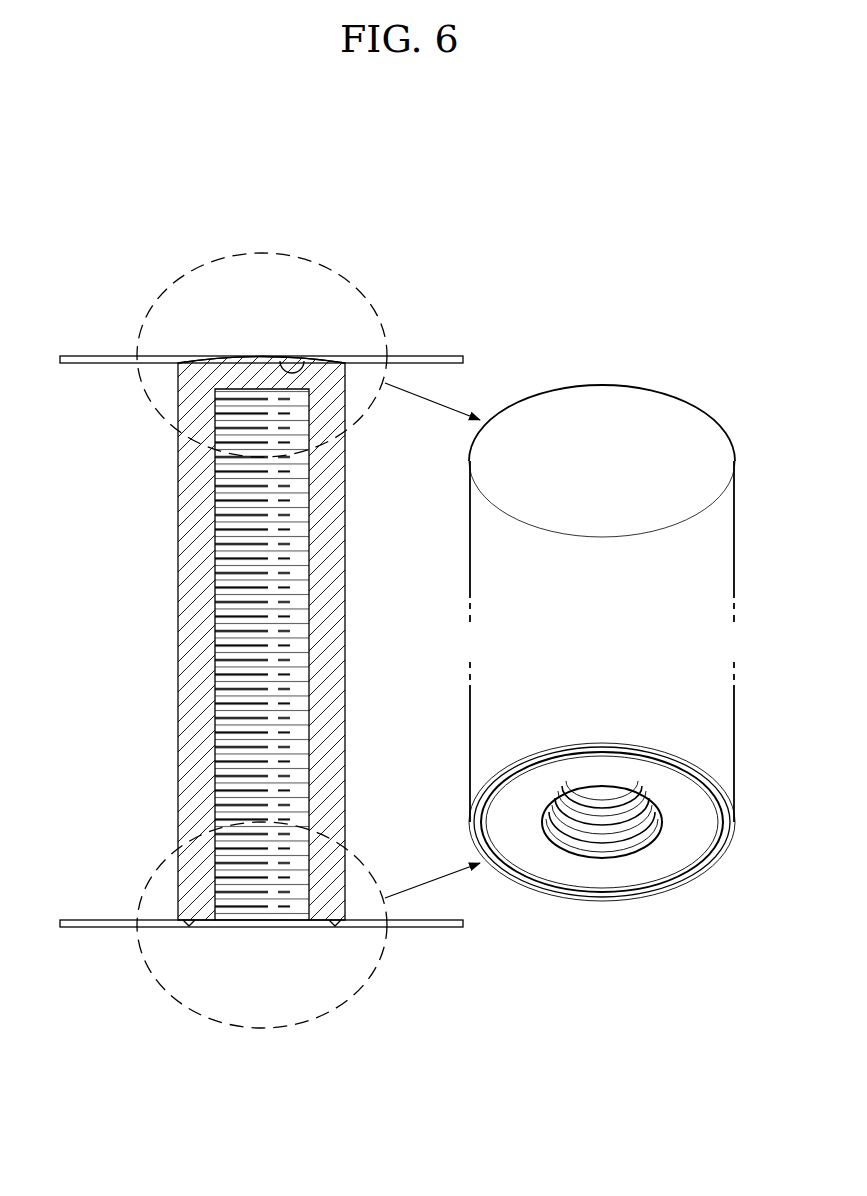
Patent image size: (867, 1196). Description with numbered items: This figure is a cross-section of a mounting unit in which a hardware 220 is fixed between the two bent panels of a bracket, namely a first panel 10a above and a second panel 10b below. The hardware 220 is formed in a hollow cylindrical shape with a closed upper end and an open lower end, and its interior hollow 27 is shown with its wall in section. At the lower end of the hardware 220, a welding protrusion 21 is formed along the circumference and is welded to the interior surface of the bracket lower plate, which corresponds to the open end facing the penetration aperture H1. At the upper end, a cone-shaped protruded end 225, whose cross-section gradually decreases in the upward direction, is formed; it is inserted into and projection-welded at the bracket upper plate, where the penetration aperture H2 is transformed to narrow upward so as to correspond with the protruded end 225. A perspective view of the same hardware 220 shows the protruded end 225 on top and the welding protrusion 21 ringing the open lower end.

The first panel 10a is at (87, 358).
The second panel 10b is at (87, 927).
The hardware 220 is at (178, 584).
The protruded end 225 is at (262, 357).
The second penetration aperture H2 is at (306, 362).
The hollow 27 is at (217, 866).
The first penetration aperture H1 is at (307, 924).
The welding protrusion 21 is at (188, 924).